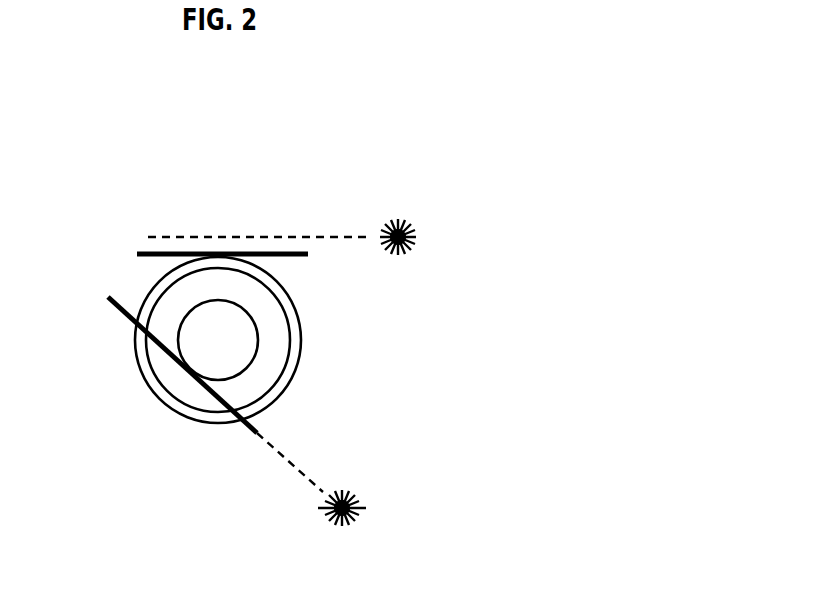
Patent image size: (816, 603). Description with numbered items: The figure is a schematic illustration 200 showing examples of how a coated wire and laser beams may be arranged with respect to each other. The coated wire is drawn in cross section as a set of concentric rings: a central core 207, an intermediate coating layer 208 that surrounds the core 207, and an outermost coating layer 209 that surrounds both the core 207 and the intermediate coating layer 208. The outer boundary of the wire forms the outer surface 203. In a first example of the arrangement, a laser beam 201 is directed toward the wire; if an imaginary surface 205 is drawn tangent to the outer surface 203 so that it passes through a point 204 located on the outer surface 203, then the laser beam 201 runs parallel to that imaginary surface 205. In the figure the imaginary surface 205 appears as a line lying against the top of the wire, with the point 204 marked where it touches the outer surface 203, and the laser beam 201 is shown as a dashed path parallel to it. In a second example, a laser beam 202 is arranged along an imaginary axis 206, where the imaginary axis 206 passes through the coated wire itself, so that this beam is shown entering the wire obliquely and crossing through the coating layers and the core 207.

The imaging system 200 is at (705, 60).
The laser beam 201 is at (331, 237).
The laser beam 202 is at (300, 467).
The outer surface 203 is at (155, 284).
The point 204 is at (220, 253).
The imaginary surface 205 is at (148, 237).
The imaginary axis 206 is at (120, 311).
The core 207 is at (243, 337).
The intermediate coating layer 208 is at (175, 380).
The outermost coating layer 209 is at (280, 292).